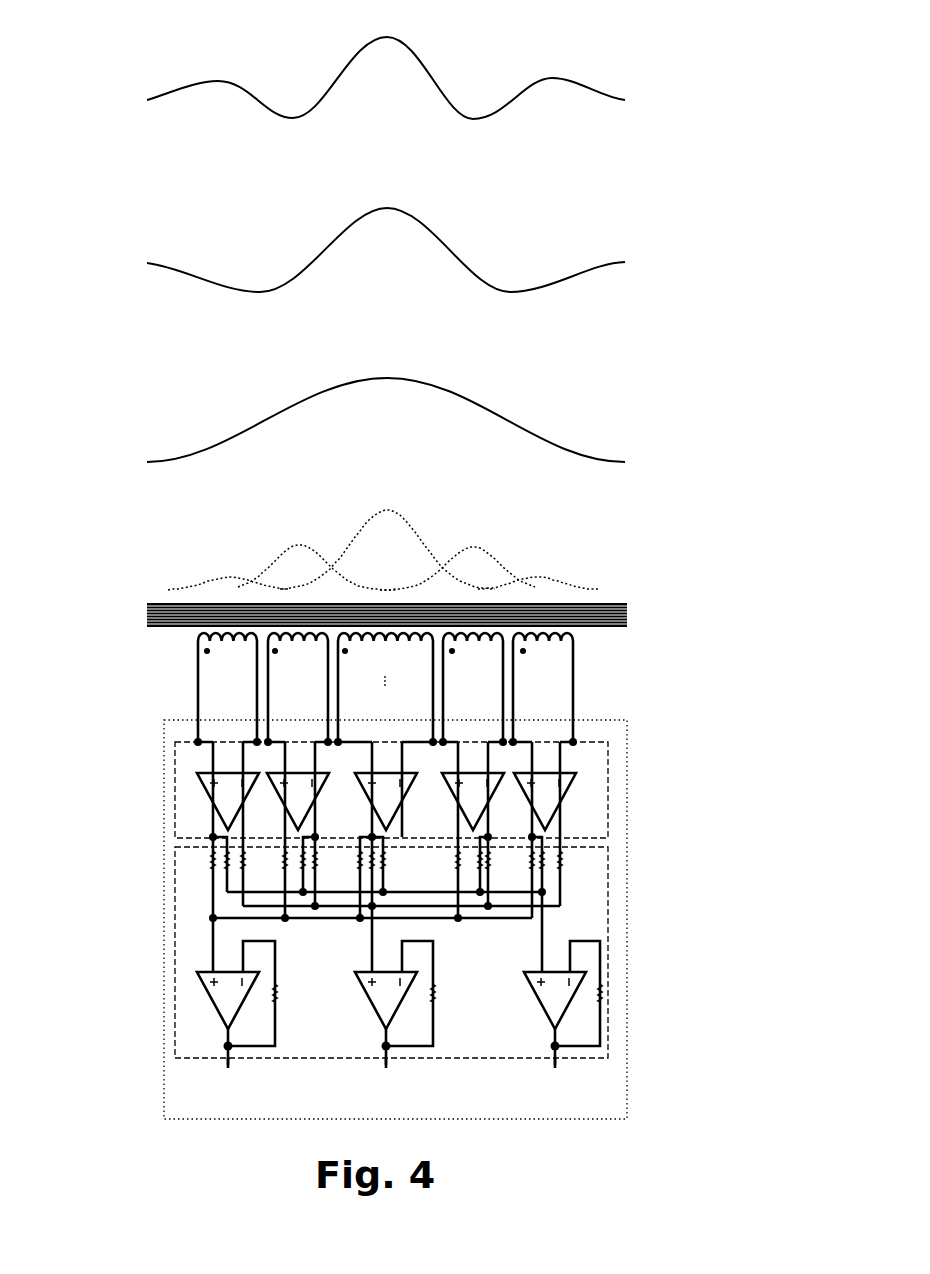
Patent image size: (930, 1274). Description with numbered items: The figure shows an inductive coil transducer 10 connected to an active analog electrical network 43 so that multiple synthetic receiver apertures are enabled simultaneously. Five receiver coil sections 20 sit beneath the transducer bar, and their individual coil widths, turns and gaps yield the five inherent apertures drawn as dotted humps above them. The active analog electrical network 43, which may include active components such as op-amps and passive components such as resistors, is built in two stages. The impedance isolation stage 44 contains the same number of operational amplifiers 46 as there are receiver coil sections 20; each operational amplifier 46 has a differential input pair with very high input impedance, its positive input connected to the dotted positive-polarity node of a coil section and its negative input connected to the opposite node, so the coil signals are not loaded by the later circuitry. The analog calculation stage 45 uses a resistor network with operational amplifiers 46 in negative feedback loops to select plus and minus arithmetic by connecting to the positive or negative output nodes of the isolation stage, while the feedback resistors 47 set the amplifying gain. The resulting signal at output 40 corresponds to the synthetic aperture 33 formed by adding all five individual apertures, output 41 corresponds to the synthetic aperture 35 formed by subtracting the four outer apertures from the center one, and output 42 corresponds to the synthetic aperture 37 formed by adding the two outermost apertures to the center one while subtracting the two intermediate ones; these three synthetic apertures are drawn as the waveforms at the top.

The synthetic aperture 37 is at (182, 83).
The synthetic aperture 35 is at (186, 284).
The synthetic aperture 33 is at (182, 470).
The inductive coil transducer 10 is at (86, 676).
The receiver coil sections 20 is at (197, 676).
The active analog electrical network 43 is at (164, 828).
The impedance isolation stage 44 is at (408, 877).
The analog calculation stage 45 is at (385, 982).
The operational amplifier 46 is at (563, 1017).
The feedback resistors 47 is at (452, 990).
The output 40 is at (232, 1087).
The output 41 is at (390, 1087).
The output 42 is at (559, 1087).